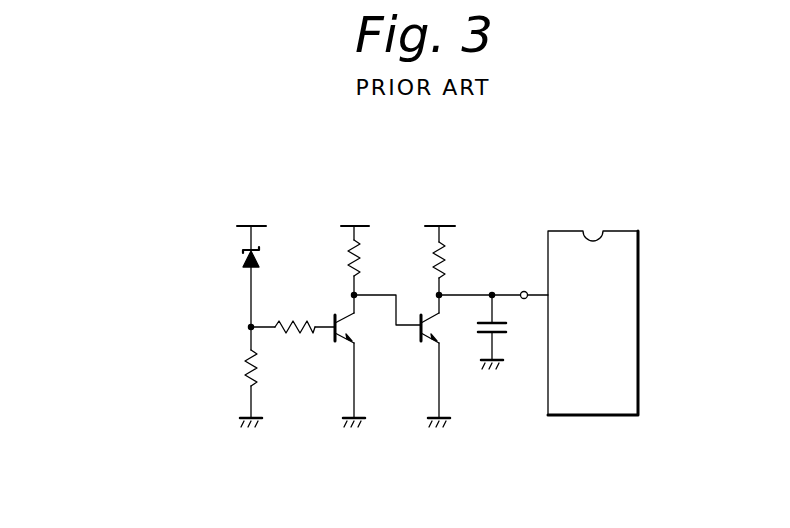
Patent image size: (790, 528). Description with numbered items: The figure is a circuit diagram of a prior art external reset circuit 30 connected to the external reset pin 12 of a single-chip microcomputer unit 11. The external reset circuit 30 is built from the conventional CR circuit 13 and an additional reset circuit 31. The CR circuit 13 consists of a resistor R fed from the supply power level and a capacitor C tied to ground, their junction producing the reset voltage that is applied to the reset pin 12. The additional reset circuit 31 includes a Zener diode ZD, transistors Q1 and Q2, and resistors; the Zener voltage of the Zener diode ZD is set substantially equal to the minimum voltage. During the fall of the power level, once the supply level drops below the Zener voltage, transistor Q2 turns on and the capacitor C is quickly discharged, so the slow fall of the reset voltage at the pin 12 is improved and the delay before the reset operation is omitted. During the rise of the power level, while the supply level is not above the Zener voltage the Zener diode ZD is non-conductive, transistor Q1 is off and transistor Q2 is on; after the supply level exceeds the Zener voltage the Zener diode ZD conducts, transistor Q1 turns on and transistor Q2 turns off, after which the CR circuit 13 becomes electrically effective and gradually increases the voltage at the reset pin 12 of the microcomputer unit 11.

The external reset circuit 30 is at (424, 165).
The additional reset circuit 31 is at (301, 220).
The CR circuit 13 is at (418, 257).
The external reset pin 12 is at (524, 290).
The single-chip microcomputer unit 11 is at (641, 329).
The Zener diode ZD is at (240, 262).
The transistor Q1 is at (346, 329).
The transistor Q2 is at (431, 329).
The resistor R is at (447, 261).
The capacitor C is at (508, 328).